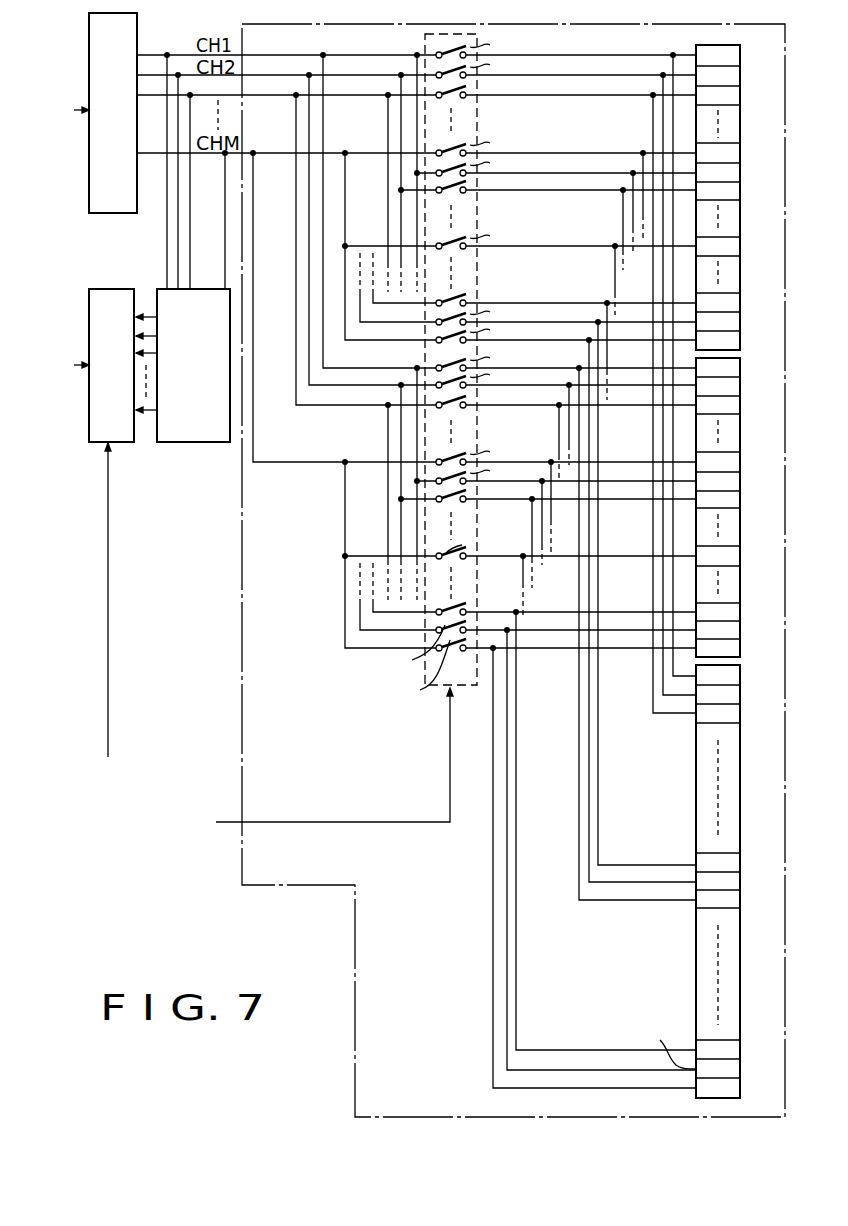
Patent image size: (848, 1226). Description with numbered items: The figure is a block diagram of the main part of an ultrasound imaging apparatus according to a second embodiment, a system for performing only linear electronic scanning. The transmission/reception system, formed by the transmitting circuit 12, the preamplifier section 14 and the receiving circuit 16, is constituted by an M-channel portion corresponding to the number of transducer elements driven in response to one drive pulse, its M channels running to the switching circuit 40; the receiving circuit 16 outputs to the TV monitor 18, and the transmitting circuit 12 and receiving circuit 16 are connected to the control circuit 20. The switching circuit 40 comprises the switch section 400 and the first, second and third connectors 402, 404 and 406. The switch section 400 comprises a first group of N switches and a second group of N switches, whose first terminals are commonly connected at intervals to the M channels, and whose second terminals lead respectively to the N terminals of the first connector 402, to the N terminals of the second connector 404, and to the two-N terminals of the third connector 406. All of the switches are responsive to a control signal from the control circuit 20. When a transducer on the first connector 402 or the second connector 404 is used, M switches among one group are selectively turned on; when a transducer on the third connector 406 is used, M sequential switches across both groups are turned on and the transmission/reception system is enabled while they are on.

The transmitting circuit 12 is at (137, 18).
The preamplifier section 14 is at (170, 442).
The receiving circuit 16 is at (113, 289).
The TV monitor 18 is at (82, 547).
The control circuit 20 is at (253, 424).
The switching circuit 40 is at (655, 24).
The switch section 400 is at (425, 40).
The first connector 402 is at (720, 44).
The second connector 404 is at (758, 350).
The third connector 406 is at (758, 657).